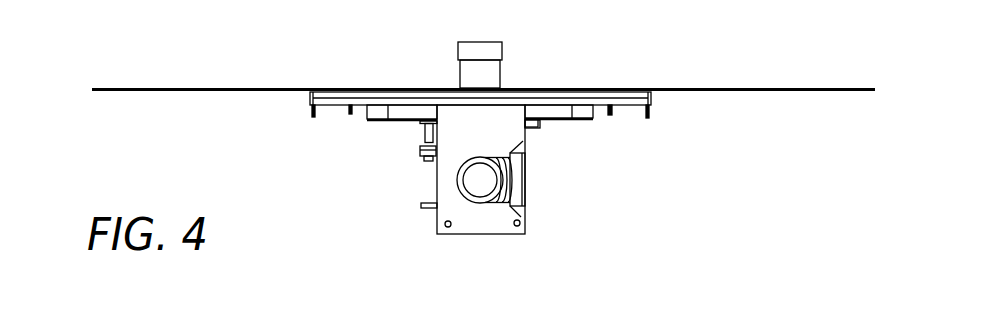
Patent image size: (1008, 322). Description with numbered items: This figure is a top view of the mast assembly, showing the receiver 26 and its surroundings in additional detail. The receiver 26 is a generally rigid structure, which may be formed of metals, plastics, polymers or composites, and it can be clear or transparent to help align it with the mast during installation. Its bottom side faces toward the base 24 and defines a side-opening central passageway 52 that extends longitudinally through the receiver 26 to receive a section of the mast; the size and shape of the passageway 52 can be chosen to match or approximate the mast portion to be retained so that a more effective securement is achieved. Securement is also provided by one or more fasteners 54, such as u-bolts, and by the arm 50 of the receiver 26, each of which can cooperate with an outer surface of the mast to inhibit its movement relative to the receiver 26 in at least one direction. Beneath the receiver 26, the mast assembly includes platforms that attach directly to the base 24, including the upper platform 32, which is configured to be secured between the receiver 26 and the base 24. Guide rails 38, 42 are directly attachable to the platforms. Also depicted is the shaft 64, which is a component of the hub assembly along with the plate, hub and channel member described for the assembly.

The base 24 is at (207, 88).
The upper platform 32 is at (310, 97).
The guide rail 42 is at (318, 113).
The guide rail 38 is at (637, 108).
The shaft 64 is at (502, 70).
The receiver 26 is at (478, 235).
The passageway 52 is at (527, 160).
The arm 50 is at (530, 197).
The fastener 54 is at (422, 153).